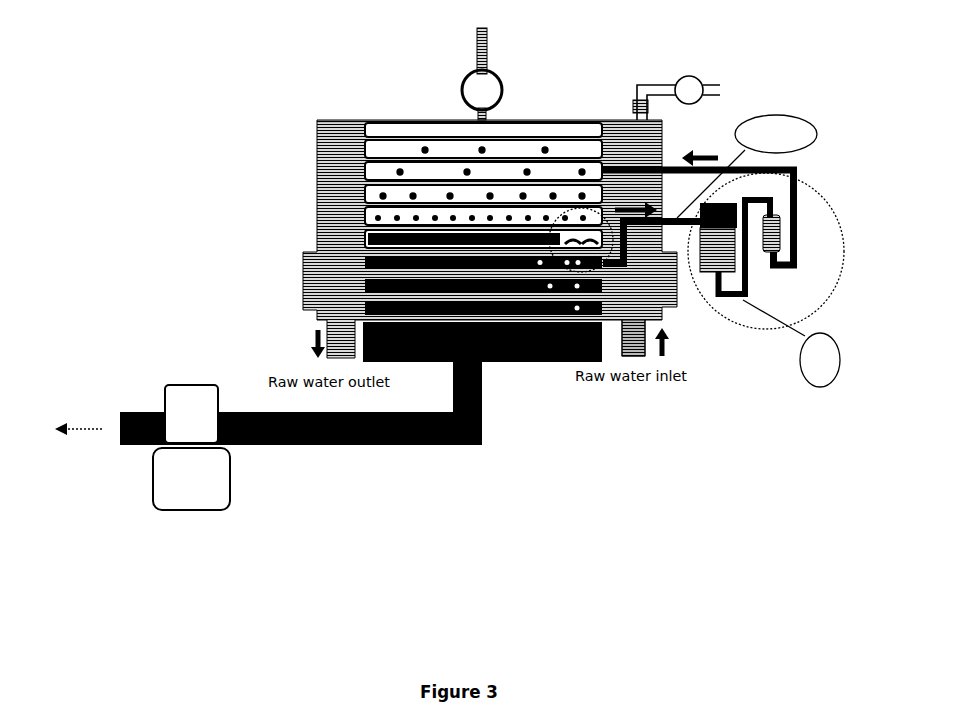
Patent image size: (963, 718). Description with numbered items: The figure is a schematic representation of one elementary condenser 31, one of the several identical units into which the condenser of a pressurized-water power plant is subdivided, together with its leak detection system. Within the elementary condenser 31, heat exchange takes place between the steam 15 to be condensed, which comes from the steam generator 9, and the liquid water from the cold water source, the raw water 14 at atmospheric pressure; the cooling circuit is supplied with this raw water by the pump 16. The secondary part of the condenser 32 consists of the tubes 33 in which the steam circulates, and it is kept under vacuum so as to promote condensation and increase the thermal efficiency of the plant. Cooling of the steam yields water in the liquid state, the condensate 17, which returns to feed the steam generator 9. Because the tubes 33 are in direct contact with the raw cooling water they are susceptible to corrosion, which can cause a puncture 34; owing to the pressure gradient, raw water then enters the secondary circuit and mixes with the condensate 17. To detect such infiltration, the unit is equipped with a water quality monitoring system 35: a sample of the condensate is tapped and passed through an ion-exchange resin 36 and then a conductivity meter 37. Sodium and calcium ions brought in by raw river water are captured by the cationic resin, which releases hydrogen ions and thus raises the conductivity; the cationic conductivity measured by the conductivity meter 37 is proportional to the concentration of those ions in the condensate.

The steam generator 9 is at (56, 430).
The raw water 14 is at (667, 310).
The steam 15 is at (547, 150).
The pump 16 is at (210, 511).
The condensate 17 is at (518, 362).
The elementary condenser 31 is at (313, 160).
The secondary part of the condenser 32 is at (437, 123).
The tubes 33 is at (378, 192).
The puncture 34 is at (592, 213).
The water quality monitoring system 35 is at (763, 251).
The ion-exchange resin 36 is at (723, 253).
The conductivity meter 37 is at (775, 233).